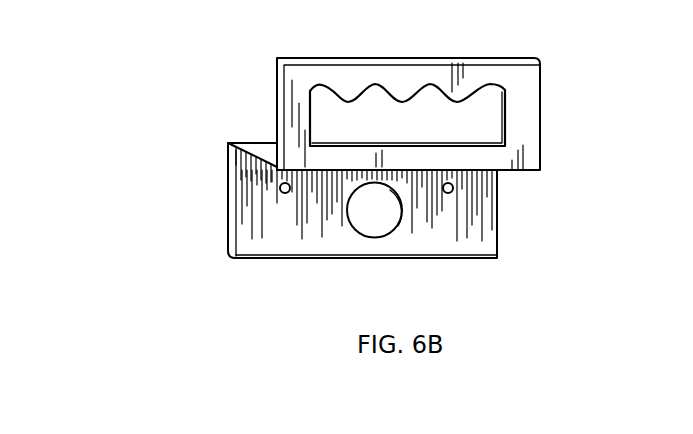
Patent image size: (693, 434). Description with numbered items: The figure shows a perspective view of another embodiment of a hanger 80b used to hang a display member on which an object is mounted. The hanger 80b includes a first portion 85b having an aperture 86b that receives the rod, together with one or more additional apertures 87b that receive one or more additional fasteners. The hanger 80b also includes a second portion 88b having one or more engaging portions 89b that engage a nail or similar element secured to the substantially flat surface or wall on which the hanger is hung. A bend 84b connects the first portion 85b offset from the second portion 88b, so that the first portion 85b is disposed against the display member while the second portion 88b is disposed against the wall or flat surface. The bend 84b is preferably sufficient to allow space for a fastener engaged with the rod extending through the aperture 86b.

The hanger 80b is at (311, 49).
The bend 84b is at (270, 150).
The first portion 85b is at (229, 210).
The aperture 86b is at (403, 212).
The additional apertures 87b is at (283, 193).
The second portion 88b is at (528, 100).
The engaging portions 89b is at (377, 90).